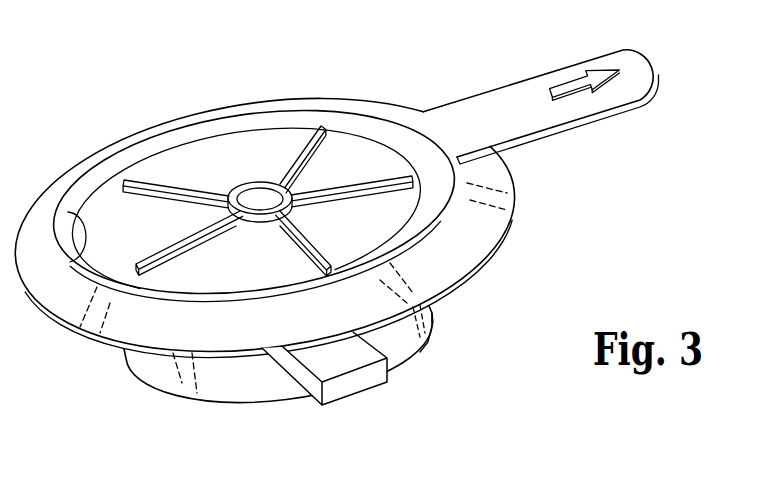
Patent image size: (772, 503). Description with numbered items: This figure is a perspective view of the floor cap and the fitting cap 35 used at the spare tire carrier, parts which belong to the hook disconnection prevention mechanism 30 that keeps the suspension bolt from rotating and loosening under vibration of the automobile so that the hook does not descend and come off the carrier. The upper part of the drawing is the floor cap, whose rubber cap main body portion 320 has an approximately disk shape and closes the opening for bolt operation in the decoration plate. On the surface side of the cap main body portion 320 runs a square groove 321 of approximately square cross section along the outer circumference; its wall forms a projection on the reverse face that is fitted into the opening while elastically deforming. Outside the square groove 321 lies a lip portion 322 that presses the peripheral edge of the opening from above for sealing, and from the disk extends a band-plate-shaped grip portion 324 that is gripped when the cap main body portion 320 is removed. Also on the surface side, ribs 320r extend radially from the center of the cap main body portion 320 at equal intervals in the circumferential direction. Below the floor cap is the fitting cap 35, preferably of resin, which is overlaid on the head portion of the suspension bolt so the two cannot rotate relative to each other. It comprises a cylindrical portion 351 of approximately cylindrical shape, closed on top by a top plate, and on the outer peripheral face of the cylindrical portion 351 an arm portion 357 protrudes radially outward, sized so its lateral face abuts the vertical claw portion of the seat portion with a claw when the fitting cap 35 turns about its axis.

The hook disconnection prevention mechanism 30 is at (188, 97).
The cap main body portion 320 is at (263, 97).
The ribs 320r is at (167, 240).
The square groove 321 is at (64, 256).
The lip portion 322 is at (477, 228).
The grip portion 324 is at (488, 122).
The fitting cap 35 is at (227, 398).
The cylindrical portion 351 is at (407, 332).
The arm portion 357 is at (340, 357).